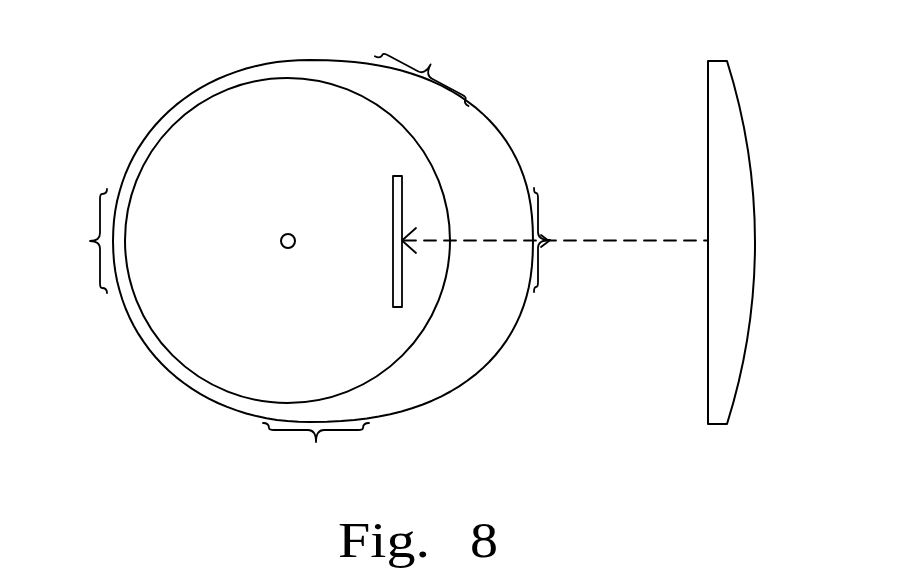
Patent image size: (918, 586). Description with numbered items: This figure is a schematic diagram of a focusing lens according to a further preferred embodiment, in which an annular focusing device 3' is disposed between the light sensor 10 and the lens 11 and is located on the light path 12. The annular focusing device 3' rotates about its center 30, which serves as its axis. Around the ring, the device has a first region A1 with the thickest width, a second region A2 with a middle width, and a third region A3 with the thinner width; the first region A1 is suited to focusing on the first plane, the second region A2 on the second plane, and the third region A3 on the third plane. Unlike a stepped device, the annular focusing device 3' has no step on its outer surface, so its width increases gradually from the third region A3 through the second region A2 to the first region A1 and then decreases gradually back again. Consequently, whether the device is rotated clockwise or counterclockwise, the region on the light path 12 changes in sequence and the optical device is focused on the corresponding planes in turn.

The annular focusing device 3' is at (311, 212).
The light sensor 10 is at (395, 175).
The lens 11 is at (740, 100).
The light path 12 is at (607, 240).
The center 30 is at (281, 236).
The first region A1 is at (555, 240).
The second region A2 is at (370, 257).
The third region A3 is at (82, 241).